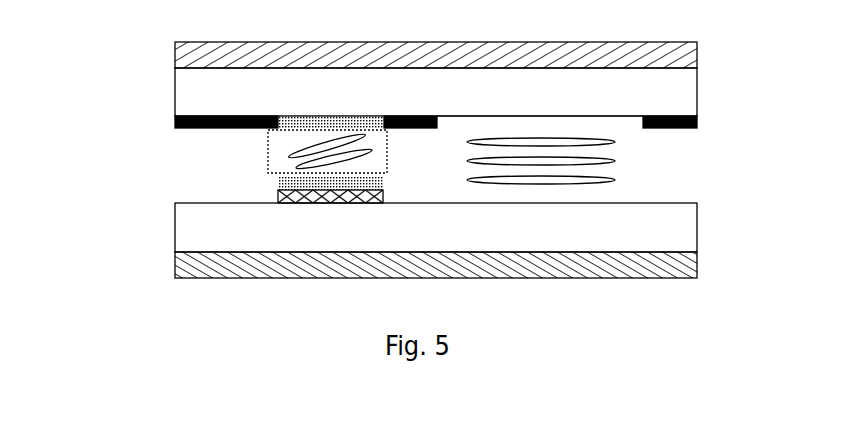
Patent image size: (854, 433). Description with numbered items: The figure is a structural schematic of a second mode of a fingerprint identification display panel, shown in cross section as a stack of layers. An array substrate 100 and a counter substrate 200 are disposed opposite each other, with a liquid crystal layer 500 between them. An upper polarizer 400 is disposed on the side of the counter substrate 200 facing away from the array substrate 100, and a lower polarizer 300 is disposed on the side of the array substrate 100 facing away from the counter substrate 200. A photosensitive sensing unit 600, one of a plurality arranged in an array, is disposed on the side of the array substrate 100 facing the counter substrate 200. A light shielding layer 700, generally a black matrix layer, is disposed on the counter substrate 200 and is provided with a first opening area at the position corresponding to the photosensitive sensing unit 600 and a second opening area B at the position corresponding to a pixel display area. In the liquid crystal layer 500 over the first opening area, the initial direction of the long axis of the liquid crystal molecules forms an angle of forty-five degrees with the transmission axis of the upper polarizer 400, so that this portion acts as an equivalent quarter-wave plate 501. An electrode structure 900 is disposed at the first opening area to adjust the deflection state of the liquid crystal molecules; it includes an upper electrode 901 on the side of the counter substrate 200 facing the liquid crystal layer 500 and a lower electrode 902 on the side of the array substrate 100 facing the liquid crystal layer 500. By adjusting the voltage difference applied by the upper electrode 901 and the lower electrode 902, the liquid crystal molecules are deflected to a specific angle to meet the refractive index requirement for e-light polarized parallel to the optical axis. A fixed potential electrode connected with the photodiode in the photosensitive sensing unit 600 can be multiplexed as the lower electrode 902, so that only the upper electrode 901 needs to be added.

The array substrate 100 is at (697, 228).
The counter substrate 200 is at (697, 92).
The lower polarizer 300 is at (697, 268).
The upper polarizer 400 is at (697, 50).
The liquid crystal layer 500 is at (598, 153).
The equivalent quarter-wave plate 501 is at (268, 155).
The photosensitive sensing unit 600 is at (280, 201).
The light shielding layer 700 is at (411, 114).
The electrode structure 900 is at (64, 71).
The upper electrode 901 is at (293, 114).
The lower electrode 902 is at (278, 183).
The second opening area B is at (552, 127).